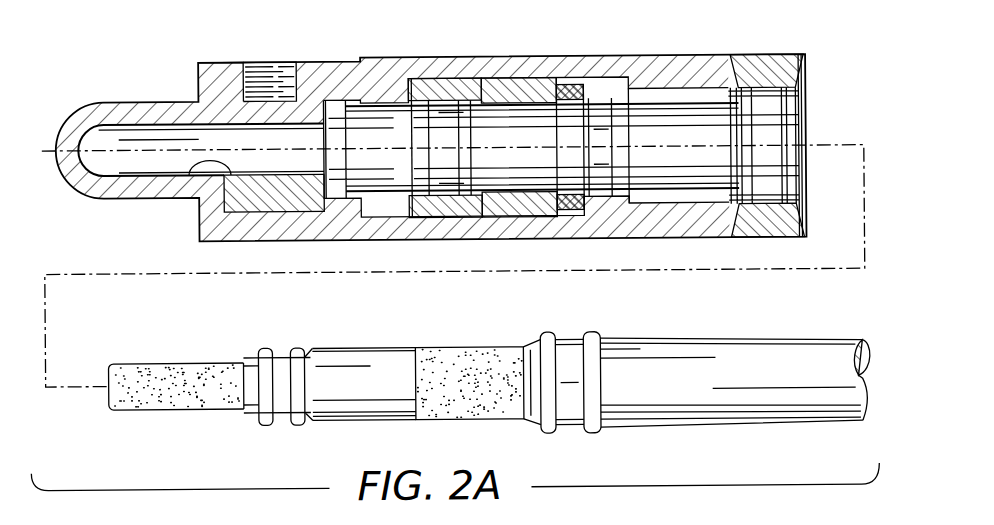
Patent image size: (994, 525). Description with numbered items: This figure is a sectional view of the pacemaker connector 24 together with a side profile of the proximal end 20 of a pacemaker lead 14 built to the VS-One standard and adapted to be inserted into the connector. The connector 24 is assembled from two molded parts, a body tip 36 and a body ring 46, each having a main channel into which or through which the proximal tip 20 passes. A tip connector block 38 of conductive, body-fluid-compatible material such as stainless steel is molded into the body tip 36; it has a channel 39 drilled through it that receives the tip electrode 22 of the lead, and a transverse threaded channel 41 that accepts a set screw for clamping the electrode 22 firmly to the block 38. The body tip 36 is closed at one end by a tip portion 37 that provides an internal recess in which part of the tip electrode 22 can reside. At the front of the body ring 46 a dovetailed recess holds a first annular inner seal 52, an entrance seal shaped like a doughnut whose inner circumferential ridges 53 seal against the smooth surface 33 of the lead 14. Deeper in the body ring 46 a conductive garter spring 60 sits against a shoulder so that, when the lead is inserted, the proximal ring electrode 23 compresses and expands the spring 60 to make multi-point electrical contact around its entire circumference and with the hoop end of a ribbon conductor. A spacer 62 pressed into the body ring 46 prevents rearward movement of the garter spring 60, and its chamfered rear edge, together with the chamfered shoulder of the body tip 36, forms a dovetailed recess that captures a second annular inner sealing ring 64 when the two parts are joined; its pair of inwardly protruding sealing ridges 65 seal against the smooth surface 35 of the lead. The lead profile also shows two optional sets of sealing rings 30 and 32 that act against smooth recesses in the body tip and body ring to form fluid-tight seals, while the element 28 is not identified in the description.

The pacemaker lead 14 is at (748, 425).
The proximal end 20 is at (622, 300).
The tip electrode 22 is at (165, 407).
The proximal ring electrode 23 is at (460, 419).
The pacemaker connector 24 is at (820, 28).
The connector 28 is at (566, 513).
The sealing rings 30 is at (253, 429).
The sealing rings 32 is at (540, 440).
The smooth surface 33 is at (680, 326).
The smooth surface 35 is at (330, 337).
The body tip 36 is at (200, 66).
The tip portion 37 is at (297, 61).
The tip connector block 38 is at (236, 60).
The channel 39 is at (190, 172).
The channel 41 is at (395, 102).
The body ring 46 is at (632, 57).
The first annular inner seal 52 is at (765, 72).
The inner circumferential ridges 53 is at (758, 97).
The garter spring 60 is at (575, 190).
The spacer 62 is at (528, 88).
The second annular inner sealing ring 64 is at (448, 88).
The sealing ridges 65 is at (458, 133).